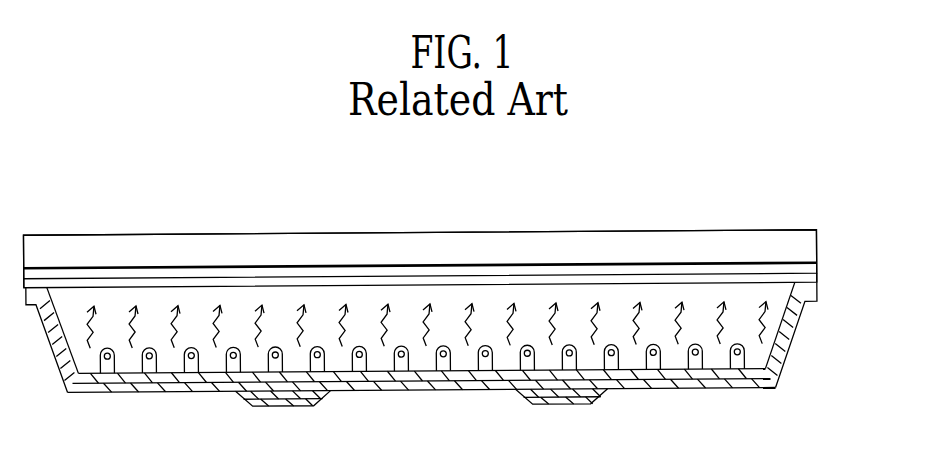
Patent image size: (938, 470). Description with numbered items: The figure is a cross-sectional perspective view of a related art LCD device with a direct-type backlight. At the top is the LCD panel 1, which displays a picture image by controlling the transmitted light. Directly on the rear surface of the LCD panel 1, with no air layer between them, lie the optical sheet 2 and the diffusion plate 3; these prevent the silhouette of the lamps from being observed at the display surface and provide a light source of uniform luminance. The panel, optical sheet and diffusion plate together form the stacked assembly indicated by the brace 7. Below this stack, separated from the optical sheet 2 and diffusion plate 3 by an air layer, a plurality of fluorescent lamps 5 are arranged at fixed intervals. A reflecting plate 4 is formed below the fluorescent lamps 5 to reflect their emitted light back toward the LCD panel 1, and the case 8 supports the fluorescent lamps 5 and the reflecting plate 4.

The LCD panel 1 is at (812, 246).
The optical sheet 2 is at (818, 271).
The diffusion plate 3 is at (818, 281).
The panel and optical sheet assembly 7 is at (870, 226).
The reflecting plate 4 is at (778, 338).
The case 8 is at (778, 375).
The fluorescent lamps 5 is at (737, 362).